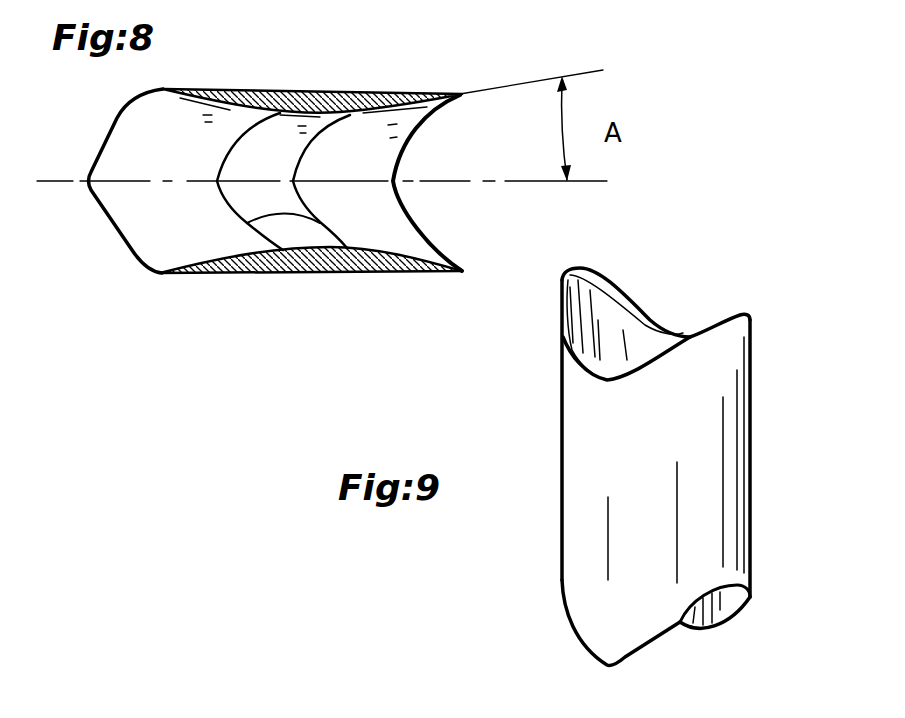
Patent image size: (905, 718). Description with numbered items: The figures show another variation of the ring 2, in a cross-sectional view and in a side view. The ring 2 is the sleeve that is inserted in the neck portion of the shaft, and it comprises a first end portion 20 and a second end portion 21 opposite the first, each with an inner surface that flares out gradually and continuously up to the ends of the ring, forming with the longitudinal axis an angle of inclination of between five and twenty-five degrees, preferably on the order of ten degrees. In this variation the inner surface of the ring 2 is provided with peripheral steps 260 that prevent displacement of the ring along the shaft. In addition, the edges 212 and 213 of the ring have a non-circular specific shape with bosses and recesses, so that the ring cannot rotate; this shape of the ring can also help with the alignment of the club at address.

In FIG. 8, the ring 2 is at (303, 87).
In FIG. 8, the first end portion 20 is at (203, 88).
In FIG. 8, the second end portion 21 is at (457, 93).
In FIG. 8, the peripheral steps 260 is at (283, 270).
In FIG. 9, the edge 212 is at (607, 282).
In FIG. 9, the edge 213 is at (657, 638).